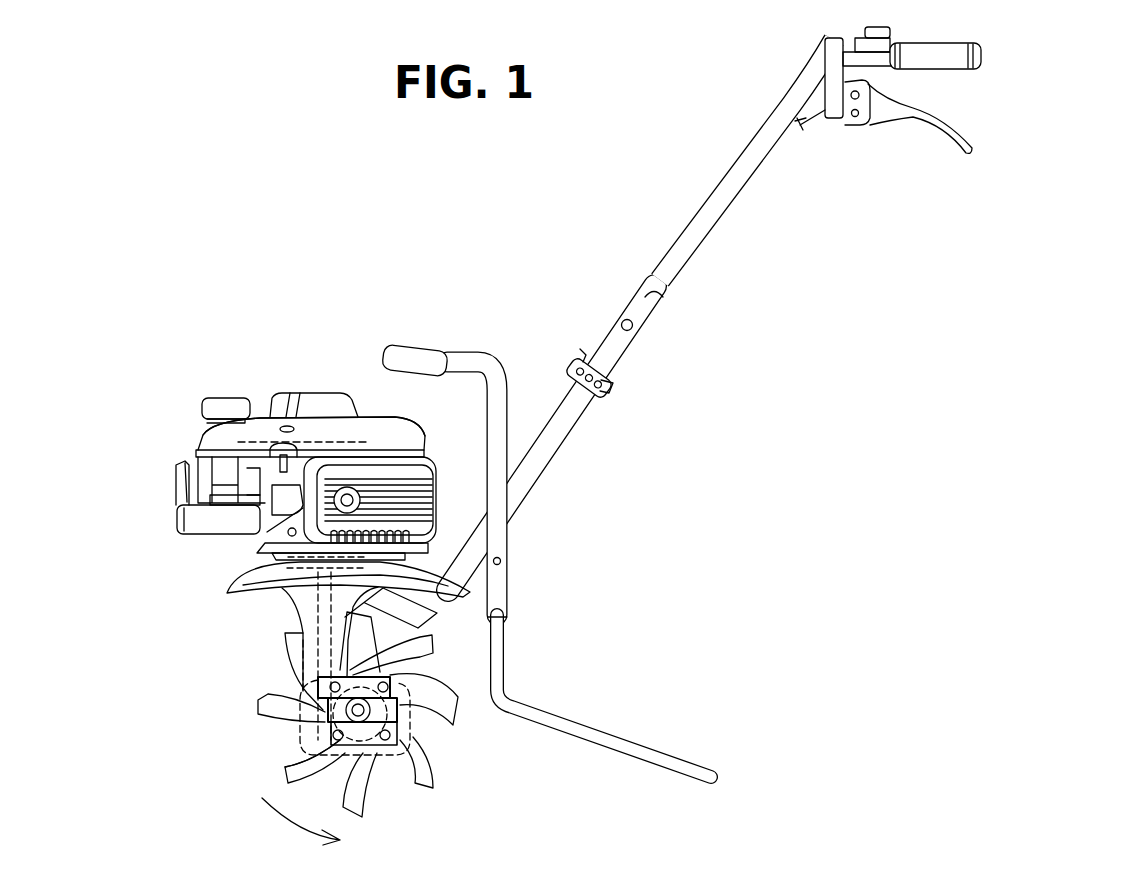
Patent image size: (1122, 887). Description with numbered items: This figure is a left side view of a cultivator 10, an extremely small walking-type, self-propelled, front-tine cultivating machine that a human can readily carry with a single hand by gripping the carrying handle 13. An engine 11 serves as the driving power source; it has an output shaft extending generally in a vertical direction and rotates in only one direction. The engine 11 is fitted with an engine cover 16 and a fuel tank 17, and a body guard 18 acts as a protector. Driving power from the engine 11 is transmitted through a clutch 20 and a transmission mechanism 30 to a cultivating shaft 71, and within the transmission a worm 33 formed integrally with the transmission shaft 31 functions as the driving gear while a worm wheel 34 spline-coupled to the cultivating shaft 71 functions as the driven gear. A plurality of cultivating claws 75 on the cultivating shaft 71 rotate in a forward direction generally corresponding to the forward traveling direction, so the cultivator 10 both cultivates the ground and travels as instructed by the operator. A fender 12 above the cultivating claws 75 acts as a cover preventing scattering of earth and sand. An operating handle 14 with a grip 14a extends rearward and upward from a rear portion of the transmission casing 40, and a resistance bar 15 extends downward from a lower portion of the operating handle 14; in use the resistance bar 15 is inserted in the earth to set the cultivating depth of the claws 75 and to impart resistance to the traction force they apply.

The cultivator 10 is at (216, 72).
The engine 11 is at (238, 442).
The fender 12 is at (465, 593).
The carrying handle 13 is at (437, 345).
The operating handle 14 is at (715, 222).
The grip 14a is at (982, 55).
The resistance bar 15 is at (620, 741).
The engine cover 16 is at (423, 443).
The fuel tank 17 is at (203, 432).
The body guard 18 is at (172, 473).
The clutch 20 is at (250, 553).
The transmission mechanism 30 is at (207, 690).
The transmission shaft 31 is at (297, 595).
The worm 33 is at (268, 700).
The worm wheel 34 is at (293, 747).
The transmission casing 40 is at (298, 607).
The cultivating shaft 71 is at (398, 722).
The cultivating claws 75 is at (433, 647).